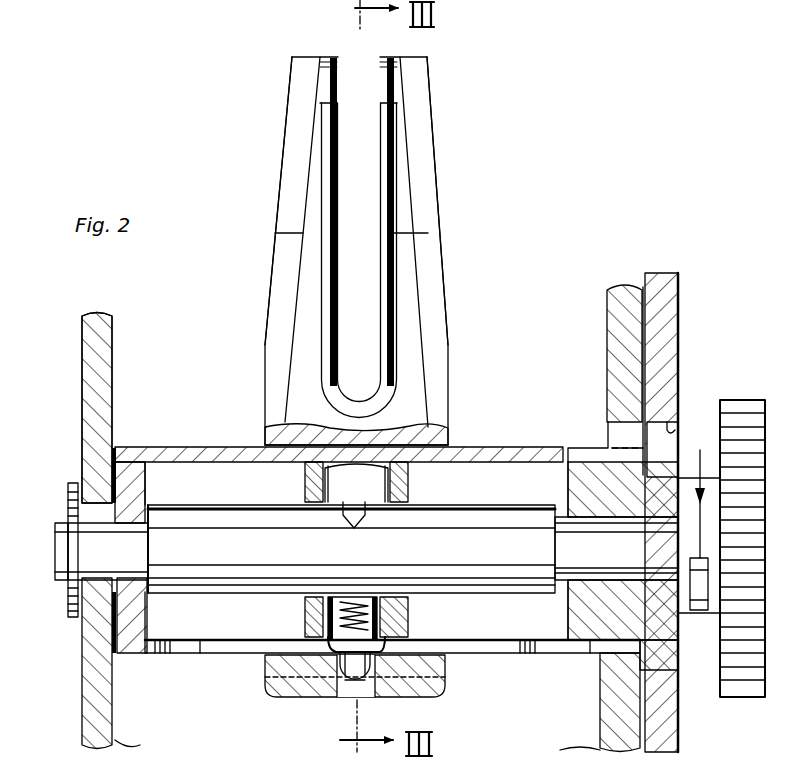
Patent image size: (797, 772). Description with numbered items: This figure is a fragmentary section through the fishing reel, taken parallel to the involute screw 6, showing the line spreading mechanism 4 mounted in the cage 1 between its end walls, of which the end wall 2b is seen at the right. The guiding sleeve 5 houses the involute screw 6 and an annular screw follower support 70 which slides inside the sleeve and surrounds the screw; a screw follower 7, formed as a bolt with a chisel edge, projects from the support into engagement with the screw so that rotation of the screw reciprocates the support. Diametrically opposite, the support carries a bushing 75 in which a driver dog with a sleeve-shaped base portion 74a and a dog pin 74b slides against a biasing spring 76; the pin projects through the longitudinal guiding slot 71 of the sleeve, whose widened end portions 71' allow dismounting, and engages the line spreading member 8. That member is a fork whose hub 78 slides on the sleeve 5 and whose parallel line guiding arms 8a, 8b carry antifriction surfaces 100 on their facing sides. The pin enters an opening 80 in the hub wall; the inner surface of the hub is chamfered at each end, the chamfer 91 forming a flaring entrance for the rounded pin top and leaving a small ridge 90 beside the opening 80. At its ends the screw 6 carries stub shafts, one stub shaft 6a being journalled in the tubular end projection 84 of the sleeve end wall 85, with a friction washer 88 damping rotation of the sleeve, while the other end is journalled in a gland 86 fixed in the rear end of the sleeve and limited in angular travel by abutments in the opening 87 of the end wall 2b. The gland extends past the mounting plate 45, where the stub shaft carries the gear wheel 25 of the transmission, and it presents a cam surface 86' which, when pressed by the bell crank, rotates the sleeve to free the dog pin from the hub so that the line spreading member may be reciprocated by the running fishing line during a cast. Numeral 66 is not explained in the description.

The cage 1 is at (90, 422).
The end wall 2b is at (114, 318).
The line spreading mechanism 4 is at (481, 362).
The guiding sleeve 5 is at (153, 444).
The involute screw 6 is at (194, 506).
The stub shaft 6a is at (93, 558).
The screw follower 7 is at (410, 485).
The line spreading member 8 is at (262, 292).
The line guiding arm 8a is at (286, 214).
The line guiding arm 8b is at (436, 214).
The gear wheel 25 is at (741, 406).
The mounting plate 45 is at (680, 310).
The bearing block 66 is at (588, 532).
The screw follower support 70 is at (306, 479).
The longitudinal guiding slot 71 is at (515, 669).
The widened end portion 71' is at (564, 669).
The sleeve-shaped base portion 74a is at (410, 636).
The dog pin 74b is at (345, 697).
The bushing 75 is at (410, 615).
The biasing spring 76 is at (305, 612).
The hub 78 is at (434, 690).
The opening 80 is at (363, 688).
The tubular end projection 84 is at (68, 512).
The end wall 85 is at (135, 487).
The gland 86 is at (640, 570).
The cam surface 86' is at (699, 611).
The opening 87 is at (672, 430).
The friction washer 88 is at (168, 508).
The ridge 90 is at (315, 648).
The chamfer 91 is at (267, 658).
The antifriction surfaces 100 is at (386, 228).